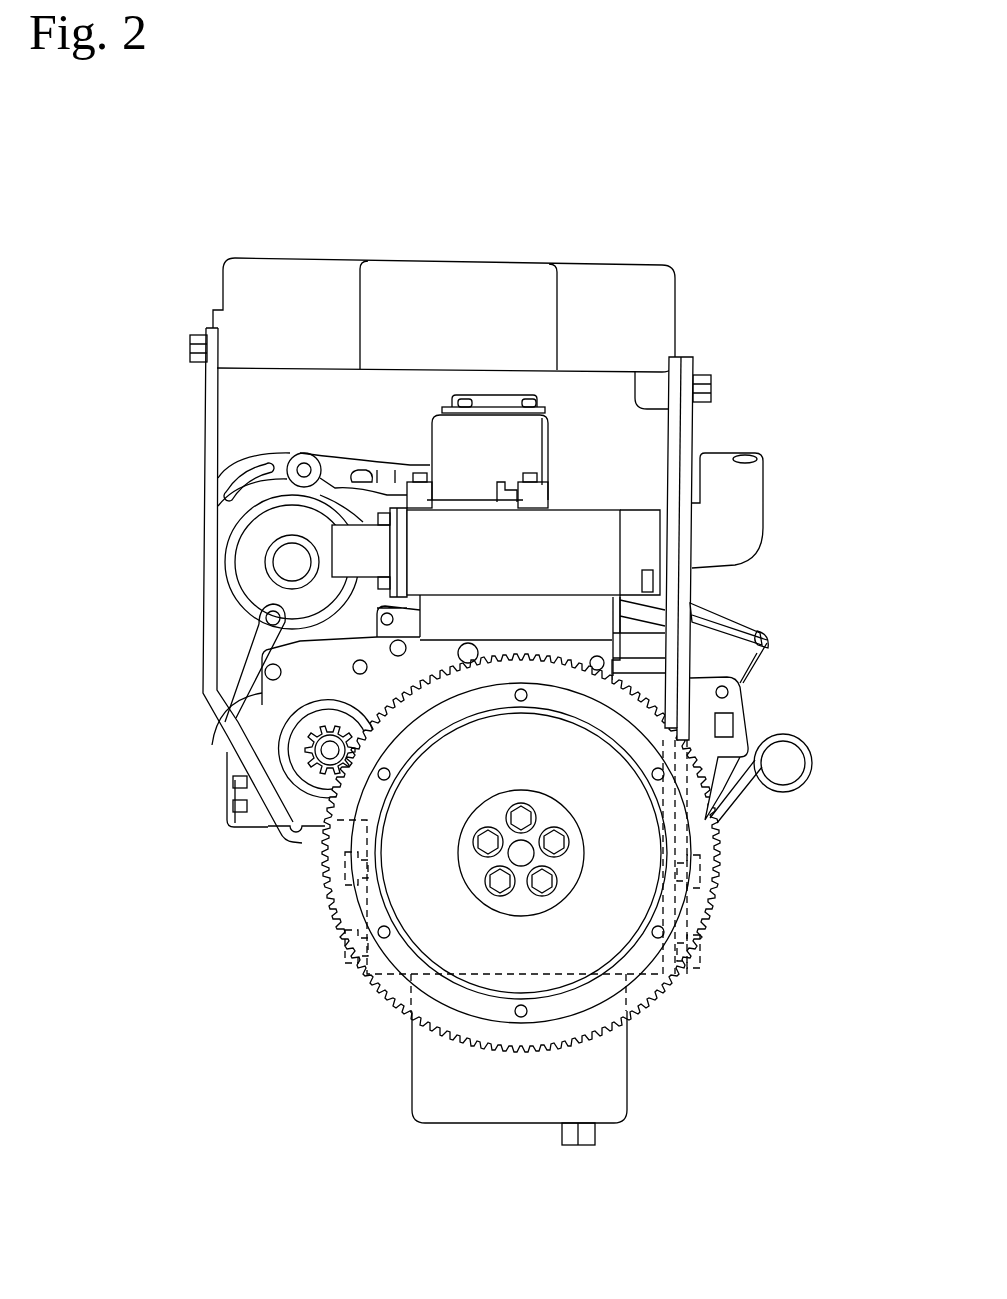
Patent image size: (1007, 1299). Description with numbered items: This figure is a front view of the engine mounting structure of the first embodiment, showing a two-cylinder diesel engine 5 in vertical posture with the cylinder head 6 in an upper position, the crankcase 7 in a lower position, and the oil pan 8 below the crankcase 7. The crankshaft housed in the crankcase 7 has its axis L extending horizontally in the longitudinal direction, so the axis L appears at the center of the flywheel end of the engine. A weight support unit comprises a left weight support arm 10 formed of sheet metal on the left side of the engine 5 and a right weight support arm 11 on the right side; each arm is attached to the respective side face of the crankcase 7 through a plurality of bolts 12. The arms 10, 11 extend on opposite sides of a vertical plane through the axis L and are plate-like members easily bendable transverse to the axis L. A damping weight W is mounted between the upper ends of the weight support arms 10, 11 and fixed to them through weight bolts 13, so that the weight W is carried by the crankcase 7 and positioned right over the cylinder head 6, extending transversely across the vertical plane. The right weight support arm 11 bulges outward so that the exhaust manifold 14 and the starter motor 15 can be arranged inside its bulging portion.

The damping weight W is at (465, 280).
The weight bolts 13 is at (190, 347).
The right weight support arm 11 is at (208, 462).
The left weight support arm 10 is at (700, 428).
The exhaust manifold 14 is at (362, 535).
The cylinder head 6 is at (570, 532).
The crankcase 7 is at (525, 632).
The engine 5 is at (790, 618).
The starter motor 15 is at (220, 655).
The axis of the crankshaft L is at (517, 850).
The bolts 12 is at (337, 868).
The oil pan 8 is at (620, 1088).